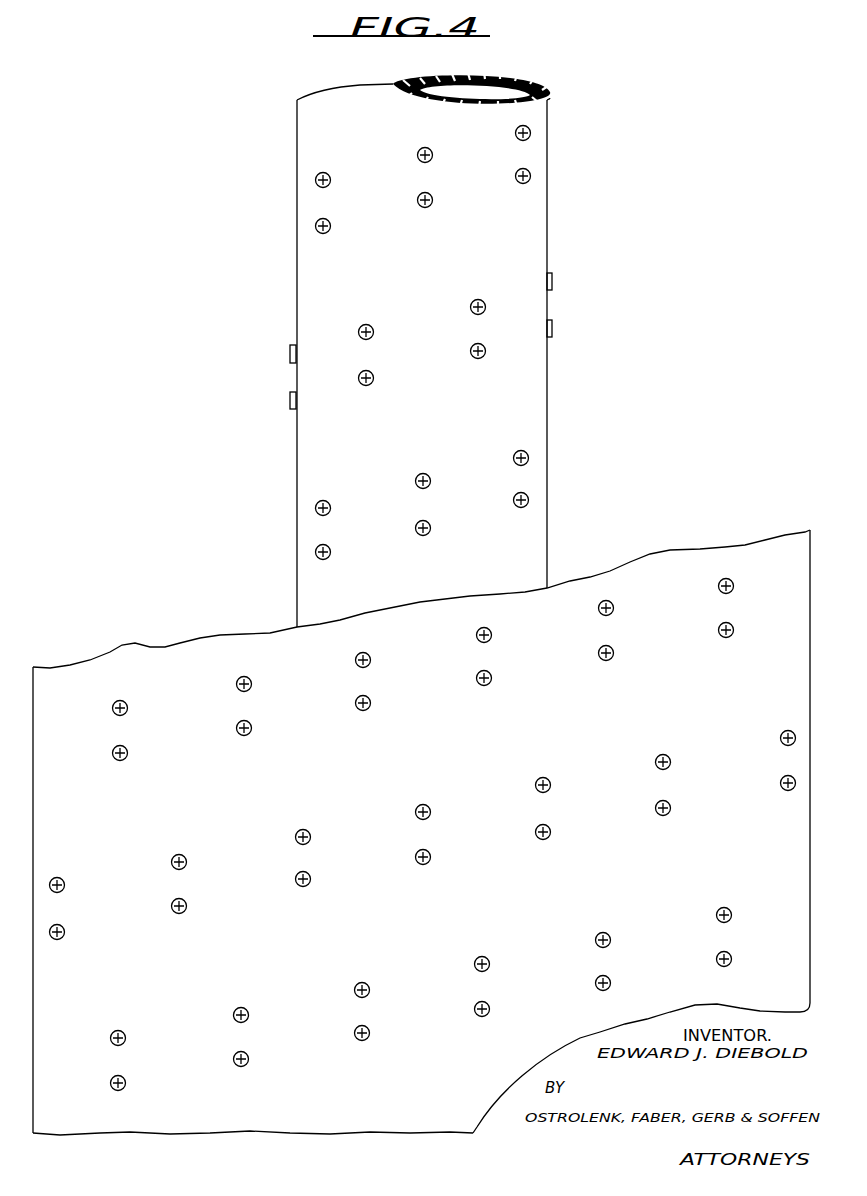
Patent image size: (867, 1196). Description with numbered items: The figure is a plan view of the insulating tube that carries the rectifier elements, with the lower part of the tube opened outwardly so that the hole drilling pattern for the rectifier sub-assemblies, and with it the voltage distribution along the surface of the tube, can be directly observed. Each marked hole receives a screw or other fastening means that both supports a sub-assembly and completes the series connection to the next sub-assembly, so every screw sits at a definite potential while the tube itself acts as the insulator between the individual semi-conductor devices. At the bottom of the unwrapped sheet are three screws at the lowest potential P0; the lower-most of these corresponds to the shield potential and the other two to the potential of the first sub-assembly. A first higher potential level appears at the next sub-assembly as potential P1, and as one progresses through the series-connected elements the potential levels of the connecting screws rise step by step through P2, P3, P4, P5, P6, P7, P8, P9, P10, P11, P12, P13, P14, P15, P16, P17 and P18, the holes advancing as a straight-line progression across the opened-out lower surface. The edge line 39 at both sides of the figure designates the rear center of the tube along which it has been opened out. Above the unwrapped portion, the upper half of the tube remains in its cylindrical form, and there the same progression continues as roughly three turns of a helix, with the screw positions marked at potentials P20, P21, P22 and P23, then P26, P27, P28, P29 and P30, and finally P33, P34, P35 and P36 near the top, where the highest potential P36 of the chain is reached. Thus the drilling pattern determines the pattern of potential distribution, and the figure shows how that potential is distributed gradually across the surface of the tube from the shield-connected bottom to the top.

The rear center line of the tube 39 is at (36, 663).
The potential level P0 is at (193, 1060).
The potential level P1 is at (315, 1024).
The potential level P2 is at (435, 999).
The potential level P3 is at (556, 973).
The potential level P4 is at (678, 949).
The potential level P5 is at (405, 923).
The potential level P6 is at (132, 895).
The potential level P7 is at (255, 870).
The potential level P8 is at (376, 847).
The potential level P9 is at (496, 822).
The potential level P10 is at (622, 796).
The potential level P11 is at (726, 772).
The potential level P12 is at (454, 745).
The potential level P13 is at (200, 718).
The potential level P14 is at (322, 693).
The potential level P15 is at (442, 669).
The potential level P16 is at (564, 644).
The potential level P17 is at (684, 619).
The potential level P18 is at (744, 586).
The potential level P20 is at (342, 552).
The potential level P21 is at (392, 518).
The potential level P22 is at (501, 490).
The potential level P23 is at (550, 458).
The potential level P26 is at (310, 401).
The potential level P27 is at (350, 366).
The potential level P28 is at (440, 341).
The potential level P29 is at (528, 318).
The potential level P30 is at (566, 282).
The potential level P33 is at (341, 226).
The potential level P34 is at (341, 180).
The potential level P35 is at (502, 165).
The potential level P36 is at (502, 166).